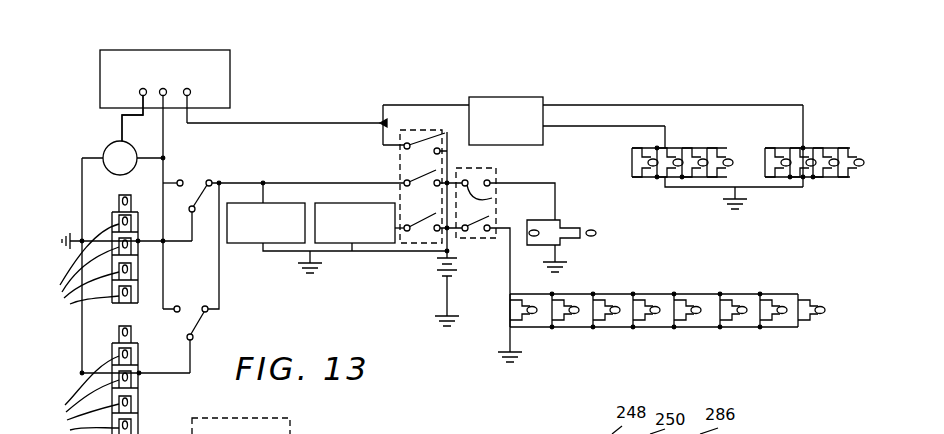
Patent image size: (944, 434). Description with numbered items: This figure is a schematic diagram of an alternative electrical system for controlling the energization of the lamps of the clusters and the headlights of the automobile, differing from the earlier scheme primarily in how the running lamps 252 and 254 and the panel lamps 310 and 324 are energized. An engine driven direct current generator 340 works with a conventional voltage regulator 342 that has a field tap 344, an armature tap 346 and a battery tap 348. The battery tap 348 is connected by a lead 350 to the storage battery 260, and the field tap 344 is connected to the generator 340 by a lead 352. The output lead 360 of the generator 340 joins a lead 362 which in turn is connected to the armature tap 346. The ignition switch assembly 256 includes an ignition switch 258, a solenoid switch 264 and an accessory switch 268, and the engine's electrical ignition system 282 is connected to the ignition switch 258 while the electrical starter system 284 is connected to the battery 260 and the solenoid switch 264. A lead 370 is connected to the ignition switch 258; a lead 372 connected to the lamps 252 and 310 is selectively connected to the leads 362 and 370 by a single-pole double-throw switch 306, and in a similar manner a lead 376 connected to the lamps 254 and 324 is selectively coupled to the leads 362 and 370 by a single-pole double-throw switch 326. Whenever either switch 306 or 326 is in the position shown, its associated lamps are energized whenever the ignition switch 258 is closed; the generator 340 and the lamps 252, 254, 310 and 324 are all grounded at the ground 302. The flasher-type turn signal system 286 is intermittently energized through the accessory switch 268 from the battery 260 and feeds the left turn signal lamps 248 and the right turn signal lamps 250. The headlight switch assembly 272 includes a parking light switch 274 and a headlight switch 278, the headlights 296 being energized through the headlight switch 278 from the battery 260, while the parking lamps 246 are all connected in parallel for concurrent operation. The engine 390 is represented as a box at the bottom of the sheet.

The voltage regulator 342 is at (190, 50).
The field tap 344 is at (140, 94).
The lead 352 is at (130, 117).
The armature tap 346 is at (165, 105).
The battery tap 348 is at (191, 92).
The lead 350 is at (312, 123).
The generator 340 is at (103, 160).
The output lead 360 is at (154, 184).
The single-pole double-throw switch 326 is at (210, 180).
The lead 376 is at (200, 242).
The lead 362 is at (160, 272).
The single-pole double-throw switch 306 is at (194, 336).
The lead 372 is at (168, 374).
The panel lamp 324 is at (118, 200).
The running lamps 254 is at (67, 264).
The panel lamp 310 is at (118, 333).
The running lamps 252 is at (67, 393).
The electrical ignition system 282 is at (279, 203).
The lead 370 is at (244, 182).
The electrical starter system 284 is at (350, 203).
The ignition switch assembly 256 is at (413, 122).
The ignition switch 258 is at (449, 131).
The accessory switch 268 is at (430, 168).
The solenoid switch 264 is at (430, 250).
The battery 260 is at (438, 284).
The ground 302 is at (437, 323).
The turn signal system 286 is at (530, 98).
The headlight switch assembly 272 is at (498, 170).
The headlight switch 278 is at (492, 199).
The parking light switch 274 is at (478, 240).
The headlights 296 is at (553, 231).
The parking lamps 246 is at (527, 328).
The right turn signal lamps 250 is at (652, 152).
The left turn signal lamps 248 is at (775, 152).
The engine 390 is at (327, 433).